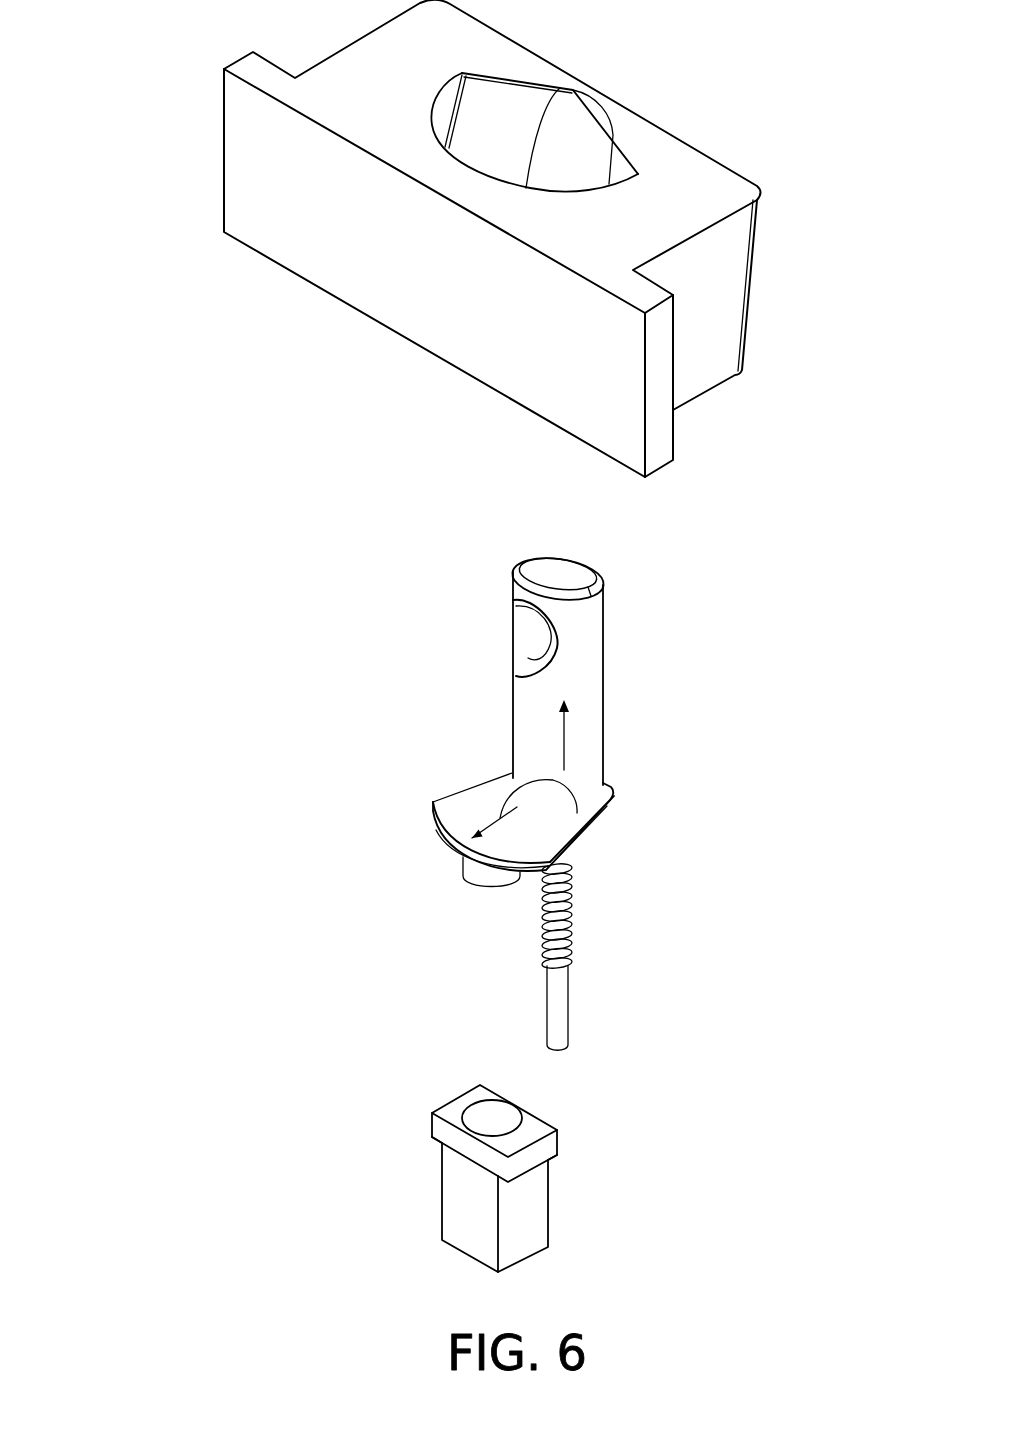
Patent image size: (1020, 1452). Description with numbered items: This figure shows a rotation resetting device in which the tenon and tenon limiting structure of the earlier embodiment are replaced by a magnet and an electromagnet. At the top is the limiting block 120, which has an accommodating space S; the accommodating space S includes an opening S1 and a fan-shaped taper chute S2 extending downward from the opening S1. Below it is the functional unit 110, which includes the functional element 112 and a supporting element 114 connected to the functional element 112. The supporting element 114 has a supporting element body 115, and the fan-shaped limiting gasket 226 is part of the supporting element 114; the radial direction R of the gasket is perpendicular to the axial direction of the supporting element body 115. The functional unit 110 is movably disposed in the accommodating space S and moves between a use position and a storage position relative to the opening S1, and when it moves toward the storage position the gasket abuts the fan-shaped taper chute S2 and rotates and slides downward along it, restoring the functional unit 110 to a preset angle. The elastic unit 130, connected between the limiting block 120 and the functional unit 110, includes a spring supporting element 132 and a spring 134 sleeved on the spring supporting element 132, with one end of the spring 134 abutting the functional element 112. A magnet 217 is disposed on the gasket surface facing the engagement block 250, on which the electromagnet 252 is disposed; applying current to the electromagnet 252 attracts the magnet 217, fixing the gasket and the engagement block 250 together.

The limiting block 120 is at (295, 147).
The accommodating space S is at (550, 96).
The opening S1 is at (492, 72).
The fan-shaped taper chute S2 is at (450, 153).
The functional unit 110 is at (444, 731).
The functional element 112 is at (540, 636).
The supporting element 114 is at (458, 712).
The supporting element body 115 is at (538, 692).
The flange portion 226 is at (478, 813).
The magnet 217 is at (478, 875).
The radial direction R is at (577, 813).
The elastic unit 130 is at (671, 956).
The spring supporting element 132 is at (563, 995).
The spring 134 is at (573, 920).
The engagement block 250 is at (562, 1177).
The electromagnet 252 is at (500, 1122).